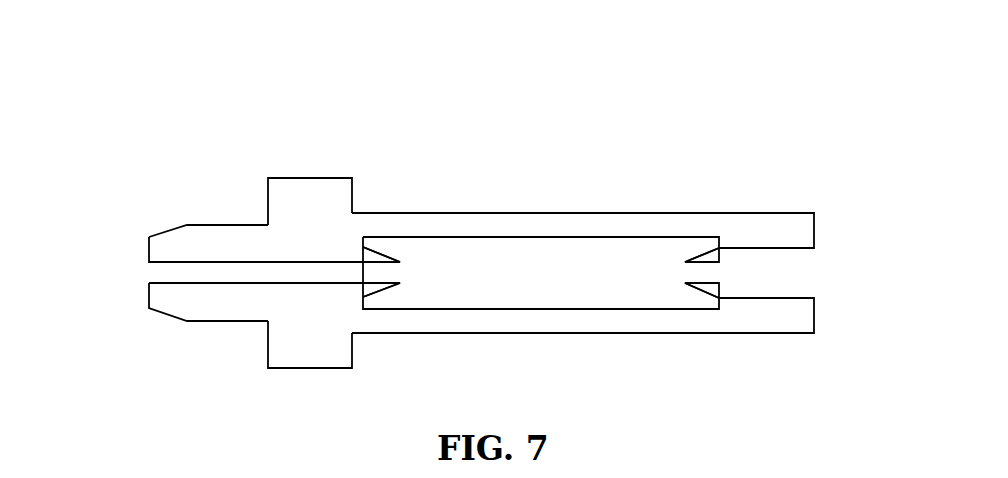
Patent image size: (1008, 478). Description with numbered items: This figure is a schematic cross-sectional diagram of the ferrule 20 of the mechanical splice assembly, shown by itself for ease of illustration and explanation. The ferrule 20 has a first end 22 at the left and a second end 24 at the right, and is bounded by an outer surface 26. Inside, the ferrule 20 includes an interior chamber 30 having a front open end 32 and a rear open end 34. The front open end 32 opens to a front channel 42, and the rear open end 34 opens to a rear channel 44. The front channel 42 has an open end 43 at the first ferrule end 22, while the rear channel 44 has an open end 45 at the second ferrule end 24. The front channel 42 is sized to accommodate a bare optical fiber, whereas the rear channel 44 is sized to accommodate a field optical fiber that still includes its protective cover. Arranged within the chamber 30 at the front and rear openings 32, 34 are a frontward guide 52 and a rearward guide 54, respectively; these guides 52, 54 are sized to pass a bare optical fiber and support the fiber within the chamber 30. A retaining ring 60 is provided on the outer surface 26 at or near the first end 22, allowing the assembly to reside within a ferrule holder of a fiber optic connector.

The ferrule 20 is at (475, 243).
The first end 22 is at (148, 248).
The second end 24 is at (817, 233).
The outer surface 26 is at (482, 333).
The interior chamber 30 is at (573, 264).
The front open end 32 is at (396, 273).
The rear open end 34 is at (704, 273).
The front channel 42 is at (195, 273).
The open end 43 is at (147, 273).
The rear channel 44 is at (734, 263).
The open end 45 is at (816, 275).
The frontward guide 52 is at (382, 262).
The rearward guide 54 is at (703, 262).
The retaining ring 60 is at (312, 178).